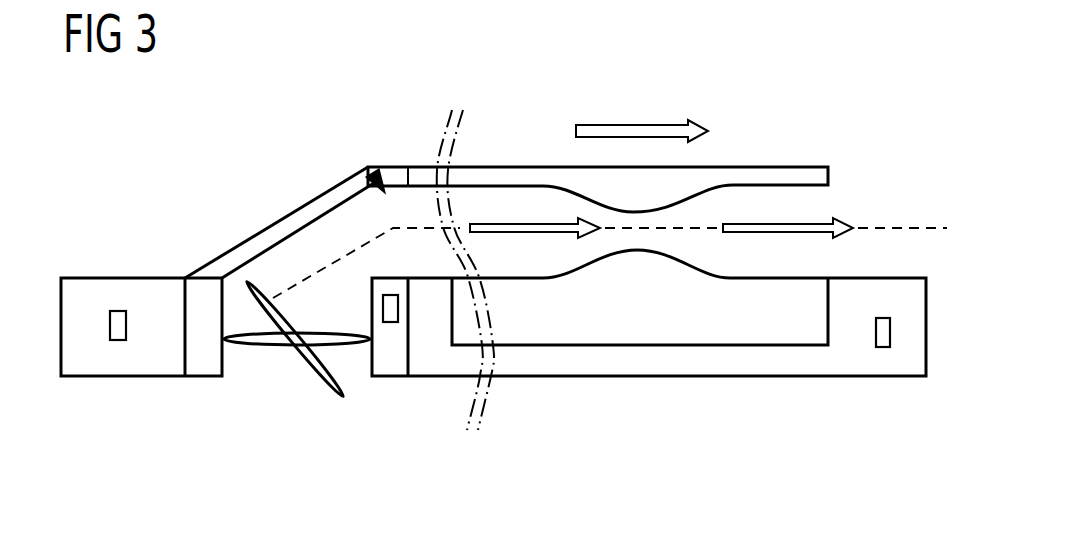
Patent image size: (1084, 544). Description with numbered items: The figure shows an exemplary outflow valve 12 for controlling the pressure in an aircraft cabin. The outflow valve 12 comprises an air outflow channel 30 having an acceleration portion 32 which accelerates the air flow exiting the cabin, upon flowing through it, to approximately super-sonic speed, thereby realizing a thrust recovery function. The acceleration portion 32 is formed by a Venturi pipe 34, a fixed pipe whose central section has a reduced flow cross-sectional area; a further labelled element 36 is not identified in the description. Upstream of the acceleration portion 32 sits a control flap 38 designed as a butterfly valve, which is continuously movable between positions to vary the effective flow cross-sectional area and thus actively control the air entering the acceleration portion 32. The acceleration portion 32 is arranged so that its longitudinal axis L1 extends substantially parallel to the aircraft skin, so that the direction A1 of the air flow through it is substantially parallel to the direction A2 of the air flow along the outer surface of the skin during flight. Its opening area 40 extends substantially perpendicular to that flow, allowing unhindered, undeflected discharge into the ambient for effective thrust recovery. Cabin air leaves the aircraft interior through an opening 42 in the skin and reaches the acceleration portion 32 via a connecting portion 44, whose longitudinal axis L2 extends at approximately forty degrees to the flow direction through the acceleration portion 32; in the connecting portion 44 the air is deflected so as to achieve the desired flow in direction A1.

The outflow valve 12 is at (740, 88).
The air outflow channel 30 is at (368, 165).
The acceleration portion 32 is at (489, 142).
The Venturi pipe 34 is at (698, 185).
The lower guide surface bump 36 is at (668, 221).
The control flap 38 is at (305, 350).
The opening area 40 is at (838, 205).
The opening 42 is at (250, 363).
The connecting portion 44 is at (232, 260).
The direction of the air flow through the acceleration portion A1 is at (837, 233).
The direction of the air flow along the outer surface of the aircraft skin A2 is at (627, 132).
The longitudinal axis of the acceleration portion L1 is at (932, 228).
The longitudinal axis of the connecting portion L2 is at (317, 272).